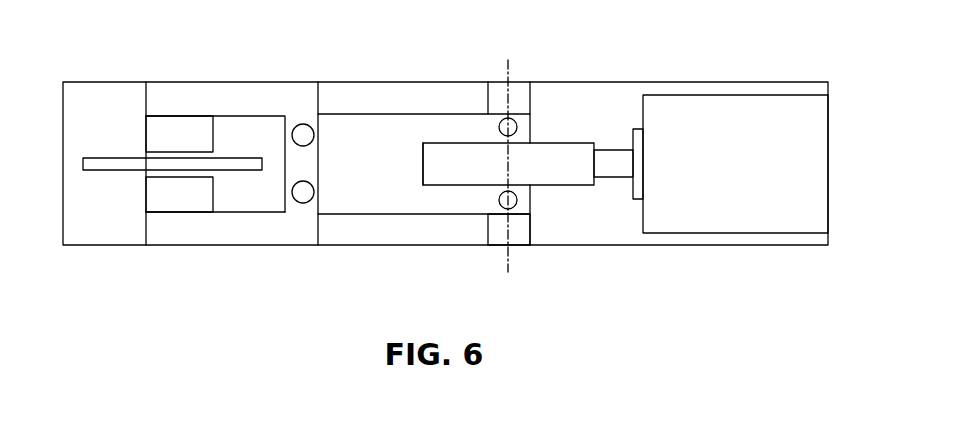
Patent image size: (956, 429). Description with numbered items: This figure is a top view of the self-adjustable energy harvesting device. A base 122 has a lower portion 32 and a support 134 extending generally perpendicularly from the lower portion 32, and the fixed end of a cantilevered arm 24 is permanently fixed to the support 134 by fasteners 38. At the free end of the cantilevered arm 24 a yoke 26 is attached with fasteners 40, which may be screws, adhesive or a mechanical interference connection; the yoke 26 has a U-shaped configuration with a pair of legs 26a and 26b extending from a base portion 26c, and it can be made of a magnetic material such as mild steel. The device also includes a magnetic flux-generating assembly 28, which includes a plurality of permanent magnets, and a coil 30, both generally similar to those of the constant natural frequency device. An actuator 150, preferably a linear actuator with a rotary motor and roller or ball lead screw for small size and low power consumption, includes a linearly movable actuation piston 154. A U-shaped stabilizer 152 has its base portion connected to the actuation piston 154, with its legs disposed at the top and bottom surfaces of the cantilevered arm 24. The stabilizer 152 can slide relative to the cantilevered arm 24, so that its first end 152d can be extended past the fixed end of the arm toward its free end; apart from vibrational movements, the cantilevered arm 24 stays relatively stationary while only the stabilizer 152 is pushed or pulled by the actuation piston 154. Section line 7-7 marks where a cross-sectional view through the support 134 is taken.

The yoke 26 is at (160, 80).
The leg 26a is at (253, 97).
The leg 26b is at (242, 230).
The base portion 26c is at (312, 208).
The coil 30 is at (100, 167).
The magnetic flux-generating assembly 28 is at (203, 142).
The fasteners 40 is at (303, 124).
The cantilevered arm 24 is at (395, 197).
The base 122 is at (438, 232).
The stabilizer 152 is at (455, 150).
The first end 152d is at (423, 165).
The fasteners 38 is at (499, 127).
The lower portion 32 is at (595, 97).
The support 134 is at (520, 228).
The actuation piston 154 is at (613, 150).
The actuator 150 is at (722, 105).
The section line 7 is at (508, 67).